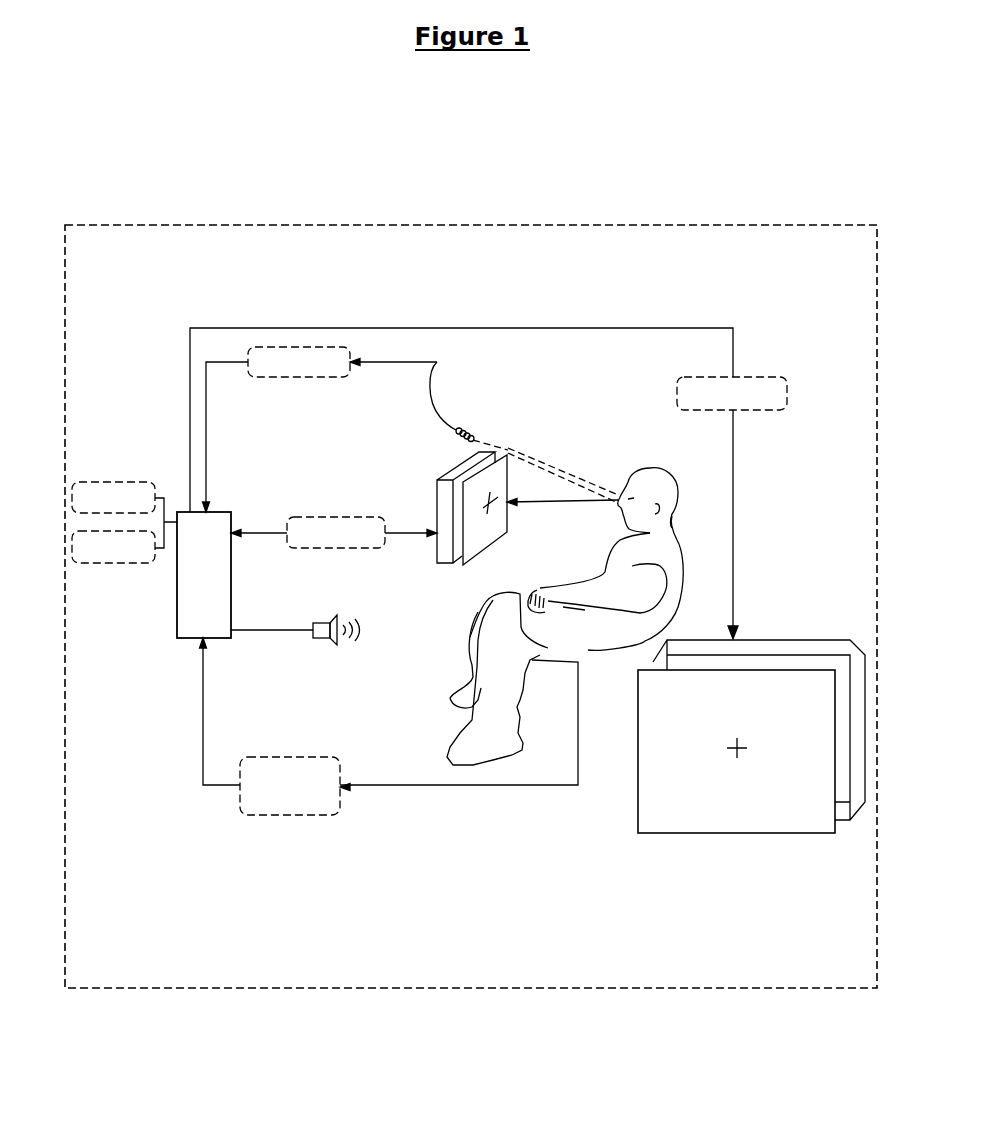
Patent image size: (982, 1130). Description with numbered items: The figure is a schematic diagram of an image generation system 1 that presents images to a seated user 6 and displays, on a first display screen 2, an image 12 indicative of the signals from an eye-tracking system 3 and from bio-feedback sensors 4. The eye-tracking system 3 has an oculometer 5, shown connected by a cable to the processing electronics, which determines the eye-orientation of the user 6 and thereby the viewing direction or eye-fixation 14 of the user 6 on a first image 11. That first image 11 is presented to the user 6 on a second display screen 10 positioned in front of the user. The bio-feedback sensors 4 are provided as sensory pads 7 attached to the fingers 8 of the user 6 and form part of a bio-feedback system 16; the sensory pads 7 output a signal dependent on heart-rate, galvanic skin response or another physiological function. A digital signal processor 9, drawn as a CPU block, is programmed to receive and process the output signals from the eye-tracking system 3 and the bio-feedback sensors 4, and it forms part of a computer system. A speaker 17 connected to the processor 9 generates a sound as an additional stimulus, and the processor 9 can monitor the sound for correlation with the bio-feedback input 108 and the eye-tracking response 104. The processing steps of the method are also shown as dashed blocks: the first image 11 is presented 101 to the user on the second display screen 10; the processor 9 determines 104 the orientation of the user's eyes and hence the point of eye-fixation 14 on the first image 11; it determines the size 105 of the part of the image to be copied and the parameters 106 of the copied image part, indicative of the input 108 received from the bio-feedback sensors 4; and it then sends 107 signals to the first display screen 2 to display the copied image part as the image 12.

The image generation system 1 is at (235, 225).
The first display screen 2 is at (852, 652).
The eye-tracking system 3 is at (424, 350).
The bio-feedback sensors 4 is at (548, 635).
The oculometer 5 is at (456, 428).
The user 6 is at (636, 458).
The sensory pads 7 is at (483, 630).
The fingers 8 is at (537, 589).
The digital signal processor 9 is at (177, 583).
The second display screen 10 is at (437, 562).
The first image 11 is at (485, 526).
The image 12 is at (743, 696).
The eye-fixation 14 is at (562, 513).
The bio-feedback system 16 is at (531, 768).
The speaker 17 is at (316, 640).
The presenting the first image 101 is at (336, 532).
The determining eye orientation 104 is at (299, 362).
The determining size of image part 105 is at (113, 497).
The determining parameters of copied image part 106 is at (113, 547).
The sending signals to display screen 107 is at (732, 393).
The bio-feedback input 108 is at (290, 786).